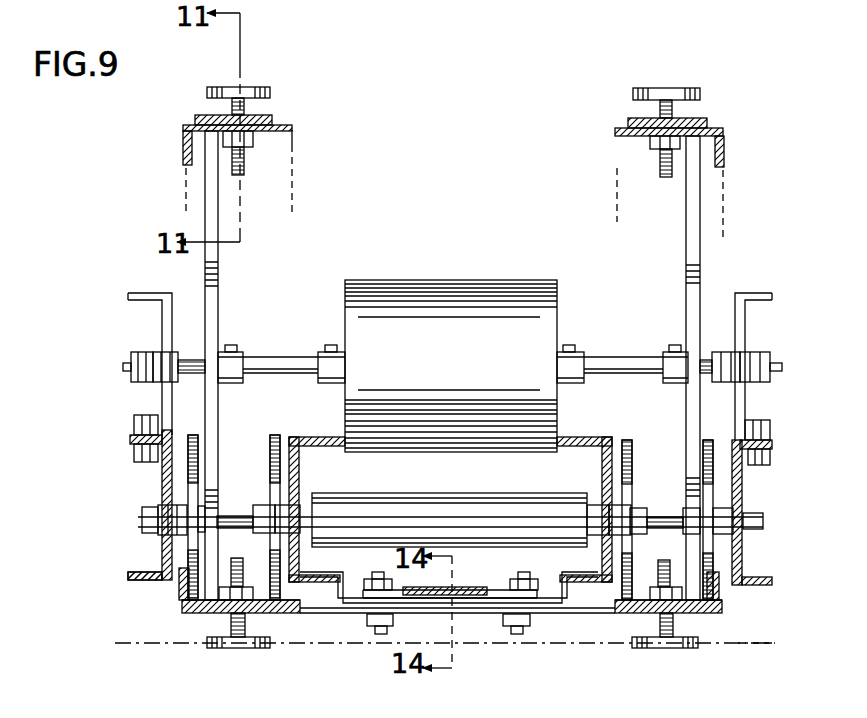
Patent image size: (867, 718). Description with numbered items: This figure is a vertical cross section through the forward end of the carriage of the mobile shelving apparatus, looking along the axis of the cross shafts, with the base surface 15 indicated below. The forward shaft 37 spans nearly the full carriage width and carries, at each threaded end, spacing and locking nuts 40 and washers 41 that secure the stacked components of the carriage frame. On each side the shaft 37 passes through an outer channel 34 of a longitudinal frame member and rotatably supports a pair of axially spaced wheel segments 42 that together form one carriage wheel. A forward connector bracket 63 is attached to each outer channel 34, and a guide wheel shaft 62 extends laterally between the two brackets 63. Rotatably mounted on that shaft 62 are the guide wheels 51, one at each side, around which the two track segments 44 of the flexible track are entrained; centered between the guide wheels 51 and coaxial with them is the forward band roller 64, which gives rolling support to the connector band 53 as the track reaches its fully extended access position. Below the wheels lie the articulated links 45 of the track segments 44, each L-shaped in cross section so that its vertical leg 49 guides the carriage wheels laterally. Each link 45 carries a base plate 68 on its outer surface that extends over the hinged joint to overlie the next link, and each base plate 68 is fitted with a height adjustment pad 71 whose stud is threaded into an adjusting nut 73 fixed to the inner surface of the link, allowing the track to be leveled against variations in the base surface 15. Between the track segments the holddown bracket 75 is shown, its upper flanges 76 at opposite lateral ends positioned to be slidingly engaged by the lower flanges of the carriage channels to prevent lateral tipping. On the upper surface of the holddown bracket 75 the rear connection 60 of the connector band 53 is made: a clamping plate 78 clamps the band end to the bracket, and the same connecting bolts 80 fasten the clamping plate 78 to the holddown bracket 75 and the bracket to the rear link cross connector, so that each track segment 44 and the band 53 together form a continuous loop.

The base surface 15 is at (746, 636).
The outer channel 34 is at (165, 470).
The forward shaft 37 is at (240, 514).
The spacing and locking nut 40 is at (146, 517).
The washer 41 is at (165, 545).
The wheel segment 42 is at (190, 432).
The track segment 44 is at (200, 622).
The link 45 is at (289, 124).
The vertical leg 49 is at (182, 585).
The guide wheel 51 is at (208, 195).
The connector band 53 is at (462, 592).
The rear connection 60 is at (421, 580).
The guide wheel shaft 62 is at (648, 358).
The forward connector bracket 63 is at (160, 320).
The forward band roller 64 is at (428, 300).
The base plate 68 is at (207, 118).
The height adjustment pad 71 is at (650, 88).
The adjusting nut 73 is at (255, 574).
The holddown bracket 75 is at (348, 575).
The upper flange 76 is at (312, 575).
The clamping plate 78 is at (455, 588).
The connecting bolt 80 is at (514, 588).